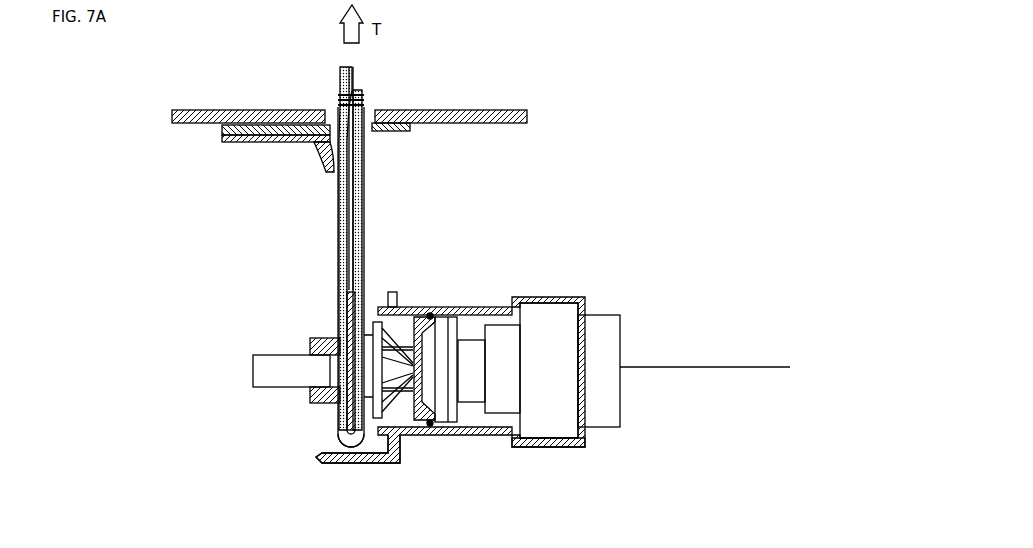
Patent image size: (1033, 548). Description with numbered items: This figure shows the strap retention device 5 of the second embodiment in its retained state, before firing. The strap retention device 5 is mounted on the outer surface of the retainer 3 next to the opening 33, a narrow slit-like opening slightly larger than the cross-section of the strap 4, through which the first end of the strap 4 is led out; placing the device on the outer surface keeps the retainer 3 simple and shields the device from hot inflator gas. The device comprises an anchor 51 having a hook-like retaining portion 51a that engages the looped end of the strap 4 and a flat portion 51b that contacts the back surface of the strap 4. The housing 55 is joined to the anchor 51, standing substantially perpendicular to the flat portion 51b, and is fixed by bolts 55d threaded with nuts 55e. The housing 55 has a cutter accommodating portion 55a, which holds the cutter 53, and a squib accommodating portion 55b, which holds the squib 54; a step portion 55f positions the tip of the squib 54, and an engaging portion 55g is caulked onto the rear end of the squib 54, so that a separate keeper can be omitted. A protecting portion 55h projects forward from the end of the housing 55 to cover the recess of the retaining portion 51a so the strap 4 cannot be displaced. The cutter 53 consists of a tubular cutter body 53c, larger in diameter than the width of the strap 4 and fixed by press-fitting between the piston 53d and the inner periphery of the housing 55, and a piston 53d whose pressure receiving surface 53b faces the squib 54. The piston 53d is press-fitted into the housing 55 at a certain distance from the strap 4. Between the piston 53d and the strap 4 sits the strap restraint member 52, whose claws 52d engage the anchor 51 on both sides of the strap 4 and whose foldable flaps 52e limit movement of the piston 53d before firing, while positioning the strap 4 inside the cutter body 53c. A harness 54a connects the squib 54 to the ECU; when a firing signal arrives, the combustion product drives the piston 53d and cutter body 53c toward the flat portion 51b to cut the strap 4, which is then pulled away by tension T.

The retainer 3 is at (471, 110).
The strap 4 is at (340, 85).
The opening 33 is at (368, 112).
The strap retention device 5 is at (620, 452).
The anchor 51 is at (290, 160).
The retaining portion 51a is at (327, 436).
The flat portion 51b is at (346, 305).
The strap restraint member 52 is at (374, 321).
The claws 52d is at (326, 378).
The flaps 52e is at (395, 366).
The cutter 53 is at (447, 481).
The pressure receiving surface 53b is at (432, 356).
The cutter body 53c is at (420, 437).
The piston 53d is at (447, 437).
The squib 54 is at (518, 370).
The harness 54a is at (711, 368).
The housing 55 is at (548, 292).
The cutter accommodating portion 55a is at (483, 437).
The squib accommodating portion 55b is at (545, 448).
The bolts 55d is at (253, 371).
The nuts 55e is at (310, 345).
The step portion 55f is at (500, 306).
The engaging portion 55g is at (589, 300).
The protecting portion 55h is at (360, 465).